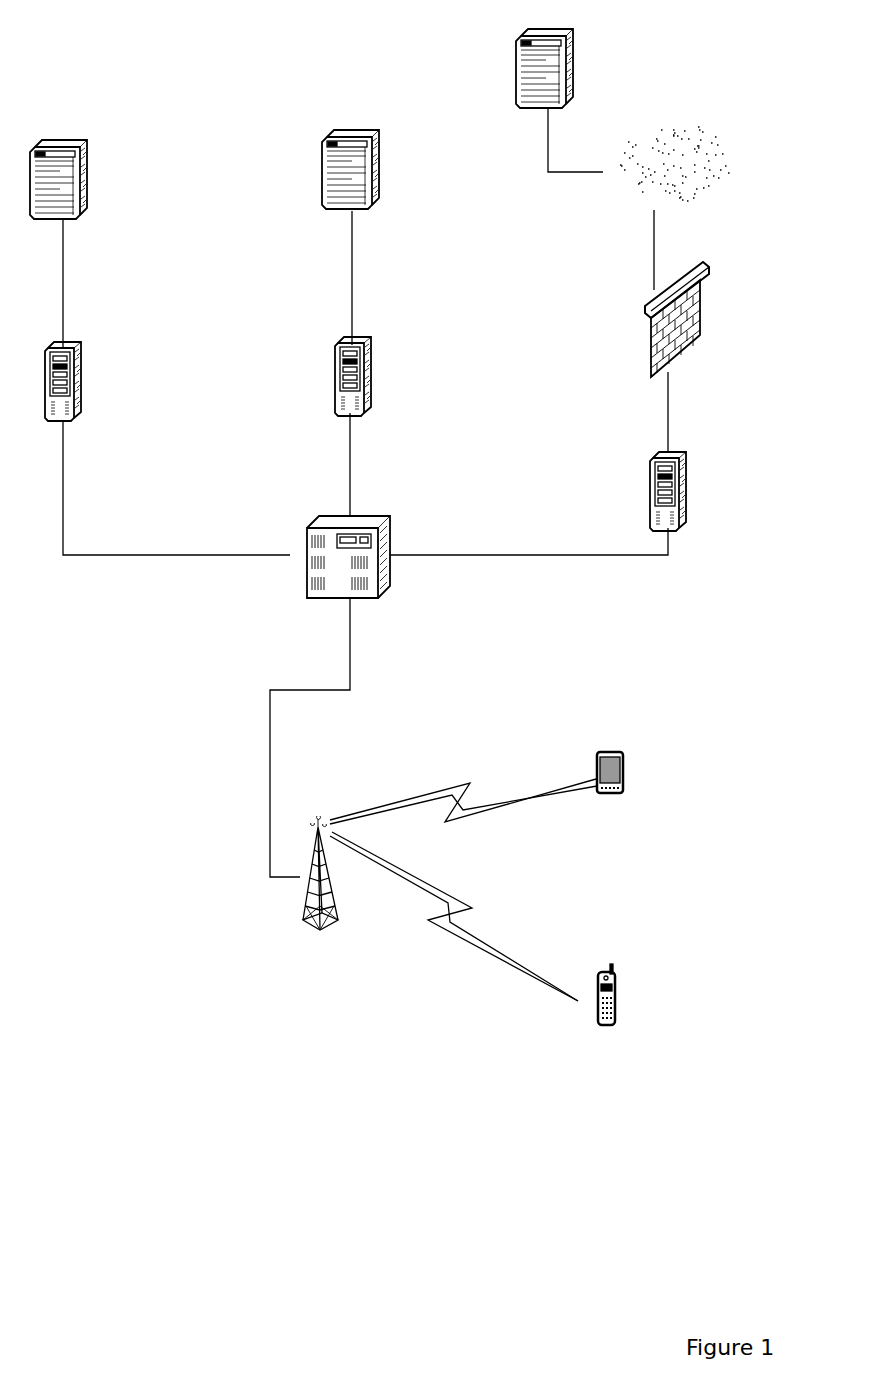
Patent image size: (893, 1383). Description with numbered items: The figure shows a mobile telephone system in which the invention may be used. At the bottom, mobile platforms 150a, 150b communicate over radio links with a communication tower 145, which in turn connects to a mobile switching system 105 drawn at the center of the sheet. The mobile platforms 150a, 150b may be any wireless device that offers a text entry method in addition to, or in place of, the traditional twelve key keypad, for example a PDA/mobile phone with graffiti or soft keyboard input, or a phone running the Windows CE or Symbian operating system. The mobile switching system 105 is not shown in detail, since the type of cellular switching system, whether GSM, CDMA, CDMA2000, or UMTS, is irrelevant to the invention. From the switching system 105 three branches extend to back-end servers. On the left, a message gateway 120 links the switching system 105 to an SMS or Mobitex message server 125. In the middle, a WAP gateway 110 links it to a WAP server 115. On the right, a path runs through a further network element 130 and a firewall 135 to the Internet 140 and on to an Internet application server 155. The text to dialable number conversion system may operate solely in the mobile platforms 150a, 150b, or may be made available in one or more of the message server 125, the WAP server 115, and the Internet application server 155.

The mobile switching system 105 is at (390, 516).
The WAP gateway 110 is at (370, 340).
The WAP server 115 is at (379, 130).
The message gateway 120 is at (78, 344).
The message server 125 is at (87, 141).
The server 130 is at (686, 452).
The firewall 135 is at (707, 263).
The Internet 140 is at (705, 108).
The communication tower 145 is at (300, 930).
The mobile platform 150a is at (628, 786).
The mobile platform 150b is at (617, 1025).
The Internet application server 155 is at (573, 29).